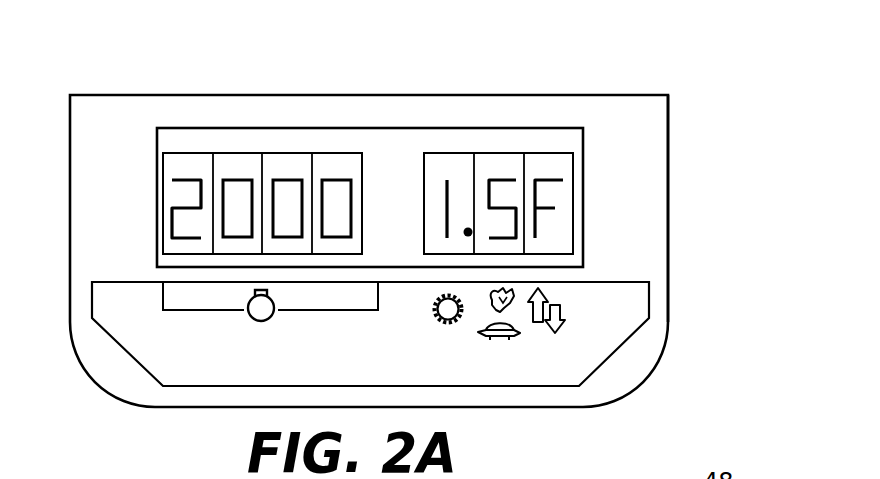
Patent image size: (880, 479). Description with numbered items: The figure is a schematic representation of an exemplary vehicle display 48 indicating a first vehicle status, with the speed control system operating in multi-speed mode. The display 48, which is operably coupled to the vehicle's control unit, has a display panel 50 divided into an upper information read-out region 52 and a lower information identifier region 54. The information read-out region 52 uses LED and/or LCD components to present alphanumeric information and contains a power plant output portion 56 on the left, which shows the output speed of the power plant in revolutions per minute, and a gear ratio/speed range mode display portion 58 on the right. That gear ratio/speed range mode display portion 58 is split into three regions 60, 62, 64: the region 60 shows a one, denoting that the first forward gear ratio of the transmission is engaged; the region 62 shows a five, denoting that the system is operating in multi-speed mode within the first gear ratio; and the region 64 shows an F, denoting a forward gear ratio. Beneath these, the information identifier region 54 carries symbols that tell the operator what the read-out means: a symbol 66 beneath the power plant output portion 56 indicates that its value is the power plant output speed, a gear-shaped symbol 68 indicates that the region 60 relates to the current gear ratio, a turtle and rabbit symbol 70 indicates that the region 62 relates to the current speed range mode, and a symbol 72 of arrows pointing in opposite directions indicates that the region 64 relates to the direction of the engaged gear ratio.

The display 48 is at (682, 61).
The display panel 50 is at (669, 212).
The information read-out region 52 is at (389, 116).
The information identifier region 54 is at (628, 369).
The power plant output portion 56 is at (218, 152).
The gear ratio/speed range mode display portion 58 is at (574, 193).
The region 60 is at (452, 152).
The region 62 is at (507, 152).
The region 64 is at (557, 152).
The symbol 66 is at (266, 355).
The symbol 68 is at (448, 325).
The symbol 70 is at (500, 341).
The symbol 72 is at (553, 335).